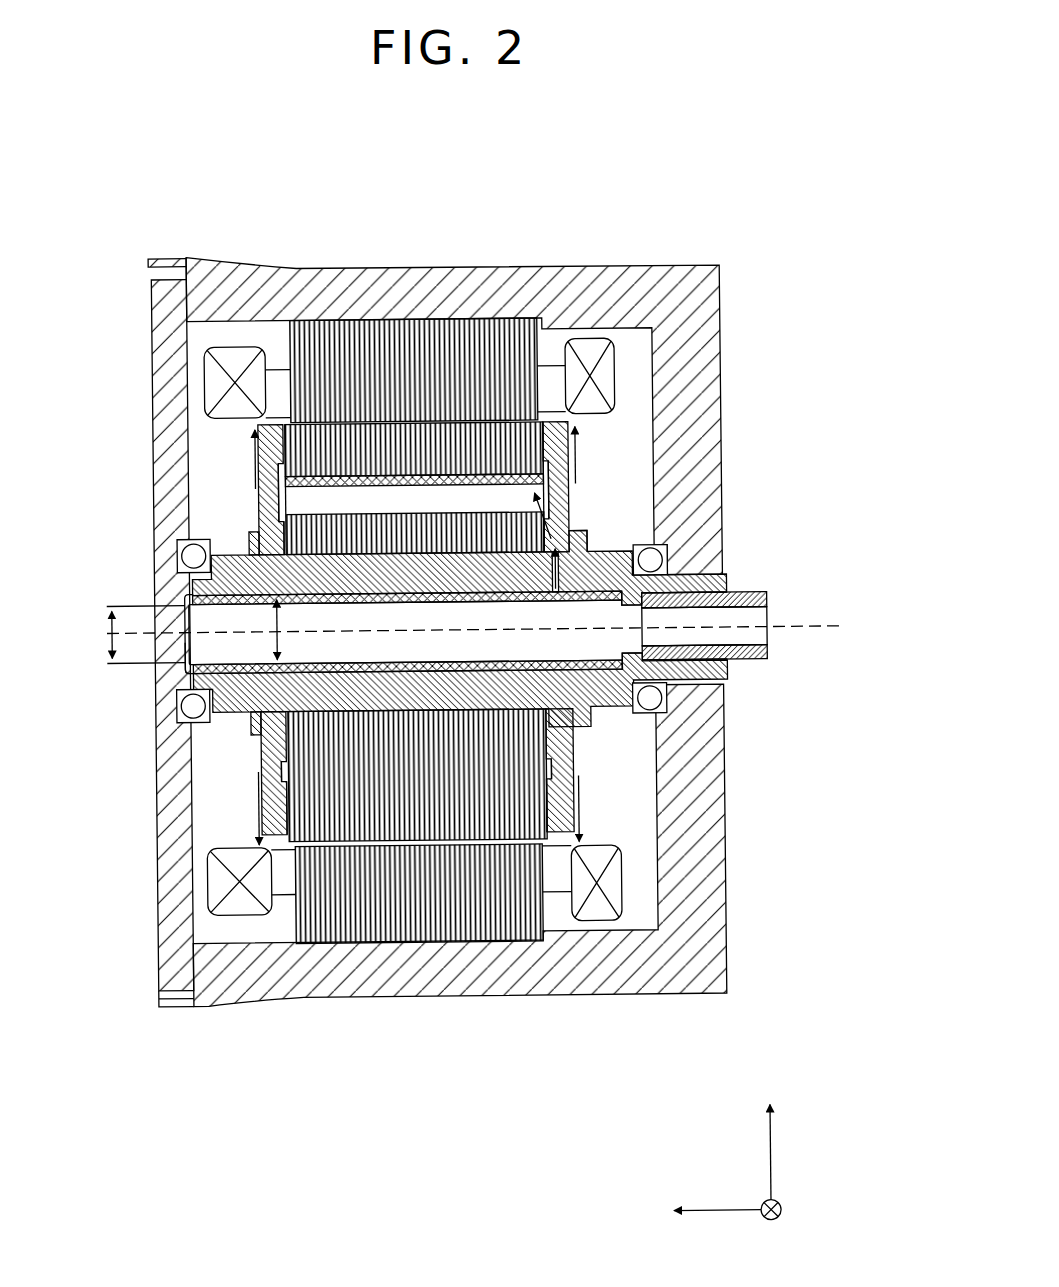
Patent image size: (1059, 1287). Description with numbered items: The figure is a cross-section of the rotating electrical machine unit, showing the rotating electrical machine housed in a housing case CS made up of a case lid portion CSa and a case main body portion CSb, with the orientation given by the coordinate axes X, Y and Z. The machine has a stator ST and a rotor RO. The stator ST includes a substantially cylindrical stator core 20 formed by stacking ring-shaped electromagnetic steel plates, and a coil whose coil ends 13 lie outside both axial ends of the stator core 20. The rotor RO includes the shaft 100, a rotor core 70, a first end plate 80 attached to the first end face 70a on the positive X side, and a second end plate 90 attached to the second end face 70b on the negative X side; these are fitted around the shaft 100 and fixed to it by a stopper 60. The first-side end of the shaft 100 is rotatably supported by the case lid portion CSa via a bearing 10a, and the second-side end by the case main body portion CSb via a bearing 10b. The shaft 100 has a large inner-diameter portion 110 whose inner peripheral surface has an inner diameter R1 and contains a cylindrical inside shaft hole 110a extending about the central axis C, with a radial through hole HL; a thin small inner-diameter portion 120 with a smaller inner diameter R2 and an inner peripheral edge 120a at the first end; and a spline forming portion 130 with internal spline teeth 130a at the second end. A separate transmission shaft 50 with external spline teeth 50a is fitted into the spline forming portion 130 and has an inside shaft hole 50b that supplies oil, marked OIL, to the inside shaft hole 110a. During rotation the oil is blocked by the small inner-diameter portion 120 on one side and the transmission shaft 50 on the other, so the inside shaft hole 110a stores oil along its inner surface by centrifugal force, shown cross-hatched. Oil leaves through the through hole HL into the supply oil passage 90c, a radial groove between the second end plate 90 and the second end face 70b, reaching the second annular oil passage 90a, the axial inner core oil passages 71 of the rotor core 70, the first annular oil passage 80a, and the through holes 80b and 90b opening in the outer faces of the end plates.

The housing case CS is at (88, 262).
The case lid portion CSa is at (152, 300).
The case main body portion CSb is at (233, 258).
The stator core 20 is at (345, 330).
The coil ends 13 is at (590, 340).
The stator ST is at (280, 333).
The rotor RO is at (255, 811).
The rotor core 70 is at (513, 803).
The first end face 70a is at (285, 447).
The second end face 70b is at (548, 440).
The inner core oil passages 71 is at (430, 509).
The first end plate 80 is at (262, 454).
The first annular oil passage 80a is at (283, 516).
The through holes 80b is at (282, 497).
The second end plate 90 is at (565, 460).
The second annular oil passage 90a is at (565, 512).
The through holes 90b is at (563, 492).
The supply oil passage 90c is at (578, 537).
The stopper 60 is at (250, 730).
The large inner-diameter portion 110 is at (362, 583).
The inside shaft hole 110a is at (470, 644).
The through hole HL is at (550, 596).
The spline forming portion 130 is at (615, 597).
The internal spline teeth 130a is at (633, 660).
The small inner-diameter portion 120 is at (185, 600).
The inner peripheral edge 120a is at (185, 650).
The bearing 10a is at (178, 552).
The bearing 10b is at (668, 560).
The transmission shaft 50 is at (757, 663).
The external spline teeth 50a is at (733, 660).
The inside shaft hole 50b is at (743, 640).
The oil flow OIL is at (708, 617).
The central axis C is at (476, 619).
The shaft 100 is at (602, 713).
The inner diameter R1 is at (293, 629).
The inner diameter R2 is at (132, 635).
The X axis X is at (707, 1212).
The Y axis Y is at (771, 1222).
The Z axis Z is at (770, 1135).